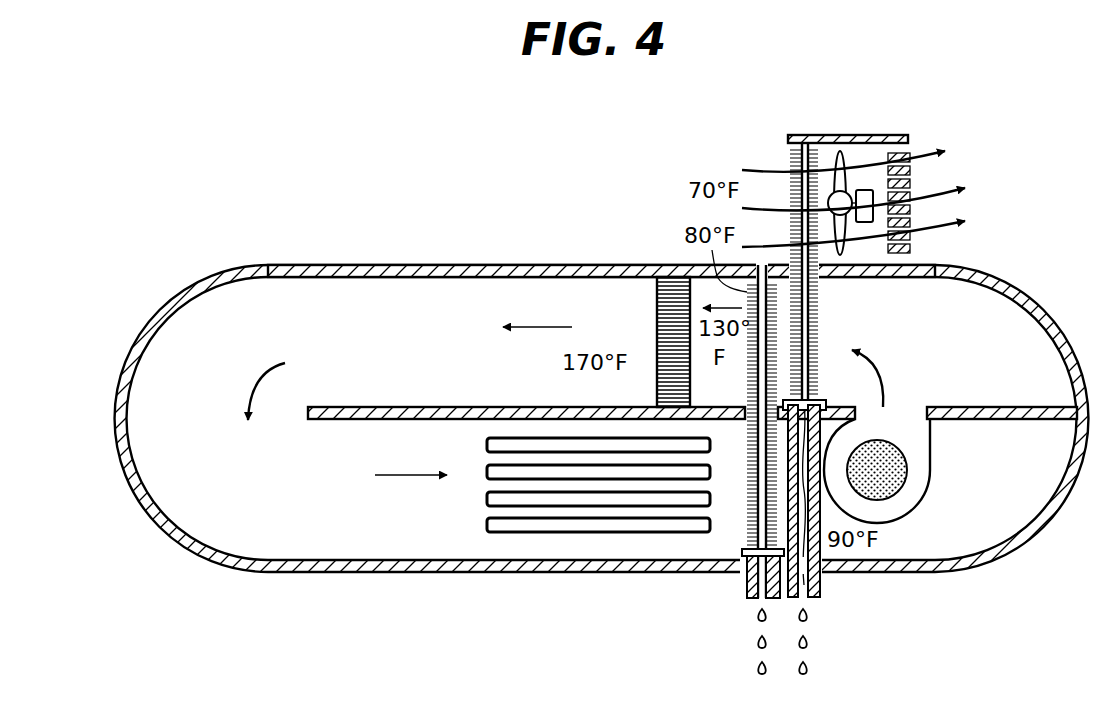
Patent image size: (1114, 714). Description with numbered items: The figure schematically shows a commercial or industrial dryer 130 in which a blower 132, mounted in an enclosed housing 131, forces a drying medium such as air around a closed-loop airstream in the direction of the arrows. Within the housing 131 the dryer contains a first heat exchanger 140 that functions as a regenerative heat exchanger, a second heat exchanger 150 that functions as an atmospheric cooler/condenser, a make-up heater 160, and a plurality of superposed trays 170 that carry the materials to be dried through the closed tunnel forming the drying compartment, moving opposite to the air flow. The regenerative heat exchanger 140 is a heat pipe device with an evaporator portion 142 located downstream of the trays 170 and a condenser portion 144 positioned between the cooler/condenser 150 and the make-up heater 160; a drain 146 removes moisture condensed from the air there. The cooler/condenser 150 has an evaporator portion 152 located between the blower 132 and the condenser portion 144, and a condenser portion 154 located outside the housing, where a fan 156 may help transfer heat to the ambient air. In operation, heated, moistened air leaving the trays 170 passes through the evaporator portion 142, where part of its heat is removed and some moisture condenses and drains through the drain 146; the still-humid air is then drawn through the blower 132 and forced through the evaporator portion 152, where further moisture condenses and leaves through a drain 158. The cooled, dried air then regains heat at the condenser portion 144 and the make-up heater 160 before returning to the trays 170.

The dryer 130 is at (100, 383).
The enclosed housing 131 is at (285, 265).
The blower 132 is at (930, 478).
The first heat exchanger 140 is at (707, 435).
The evaporator portion 142 is at (740, 524).
The condenser portion 144 is at (748, 367).
The drain 146 is at (742, 597).
The second heat exchanger 150 is at (786, 148).
The evaporator portion 152 is at (818, 310).
The condenser portion 154 is at (790, 165).
The fan 156 is at (880, 212).
The drain 158 is at (827, 588).
The make-up heater 160 is at (670, 280).
The trays 170 is at (538, 526).